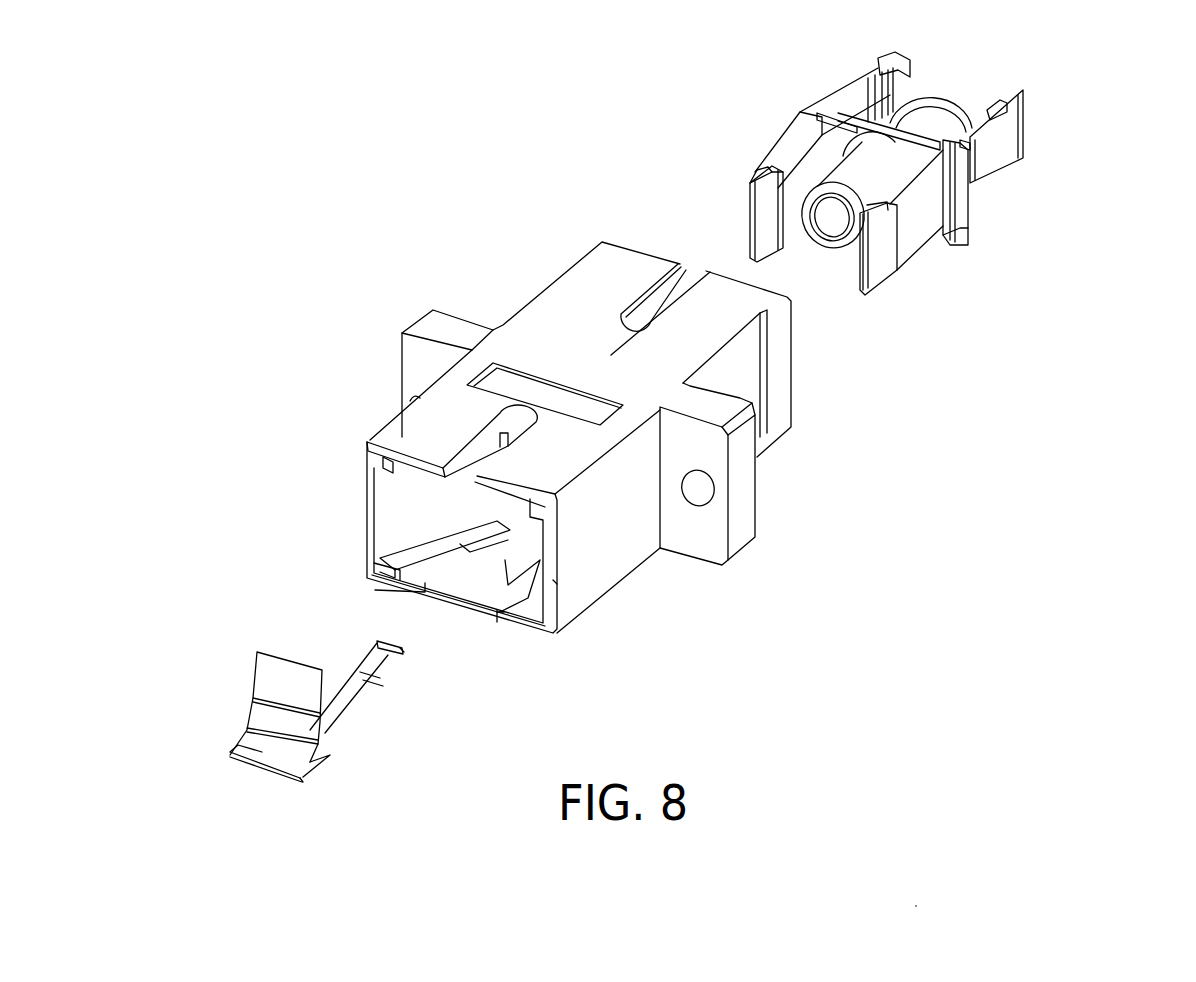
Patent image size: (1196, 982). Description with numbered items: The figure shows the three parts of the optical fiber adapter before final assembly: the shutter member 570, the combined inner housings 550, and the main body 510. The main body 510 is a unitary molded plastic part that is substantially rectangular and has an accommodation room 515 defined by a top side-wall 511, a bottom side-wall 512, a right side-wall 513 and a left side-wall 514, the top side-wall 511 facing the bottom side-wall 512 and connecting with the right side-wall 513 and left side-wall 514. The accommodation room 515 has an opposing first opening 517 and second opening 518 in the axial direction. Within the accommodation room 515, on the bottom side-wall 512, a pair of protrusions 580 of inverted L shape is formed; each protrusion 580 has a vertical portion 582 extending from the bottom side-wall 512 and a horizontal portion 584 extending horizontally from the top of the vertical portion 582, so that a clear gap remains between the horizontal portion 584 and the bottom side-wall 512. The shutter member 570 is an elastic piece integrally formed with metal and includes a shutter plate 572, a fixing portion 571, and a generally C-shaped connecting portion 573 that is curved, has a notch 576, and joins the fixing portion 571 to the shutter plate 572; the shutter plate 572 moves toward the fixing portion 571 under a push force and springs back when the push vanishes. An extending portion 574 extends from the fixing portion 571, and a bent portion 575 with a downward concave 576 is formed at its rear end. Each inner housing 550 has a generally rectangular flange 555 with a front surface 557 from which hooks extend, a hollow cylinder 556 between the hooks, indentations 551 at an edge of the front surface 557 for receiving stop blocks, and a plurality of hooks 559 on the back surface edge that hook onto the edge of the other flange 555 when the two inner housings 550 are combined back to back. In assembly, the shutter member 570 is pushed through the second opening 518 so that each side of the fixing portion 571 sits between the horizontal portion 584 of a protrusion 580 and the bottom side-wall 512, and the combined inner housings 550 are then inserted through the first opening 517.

The main body 510 is at (398, 184).
The top side-wall 511 is at (455, 406).
The bottom side-wall 512 is at (470, 608).
The right side-wall 513 is at (375, 508).
The left side-wall 514 is at (592, 602).
The accommodation room 515 is at (500, 525).
The first opening 517 is at (686, 278).
The second opening 518 is at (410, 480).
The inner housing 550 is at (733, 121).
The indentation 551 is at (837, 112).
The flange 555 is at (943, 102).
The hollow cylinder 556 is at (850, 200).
The front surface 557 is at (957, 230).
The hooks 559 is at (948, 213).
The shutter member 570 is at (220, 604).
The fixing portion 571 is at (330, 760).
The shutter plate 572 is at (275, 683).
The connecting portion 573 is at (268, 750).
The extending portion 574 is at (353, 696).
The bent portion 575 is at (398, 650).
The notch 576 is at (397, 658).
The protrusion 580 is at (545, 578).
The vertical portion 582 is at (495, 618).
The horizontal portion 584 is at (497, 612).